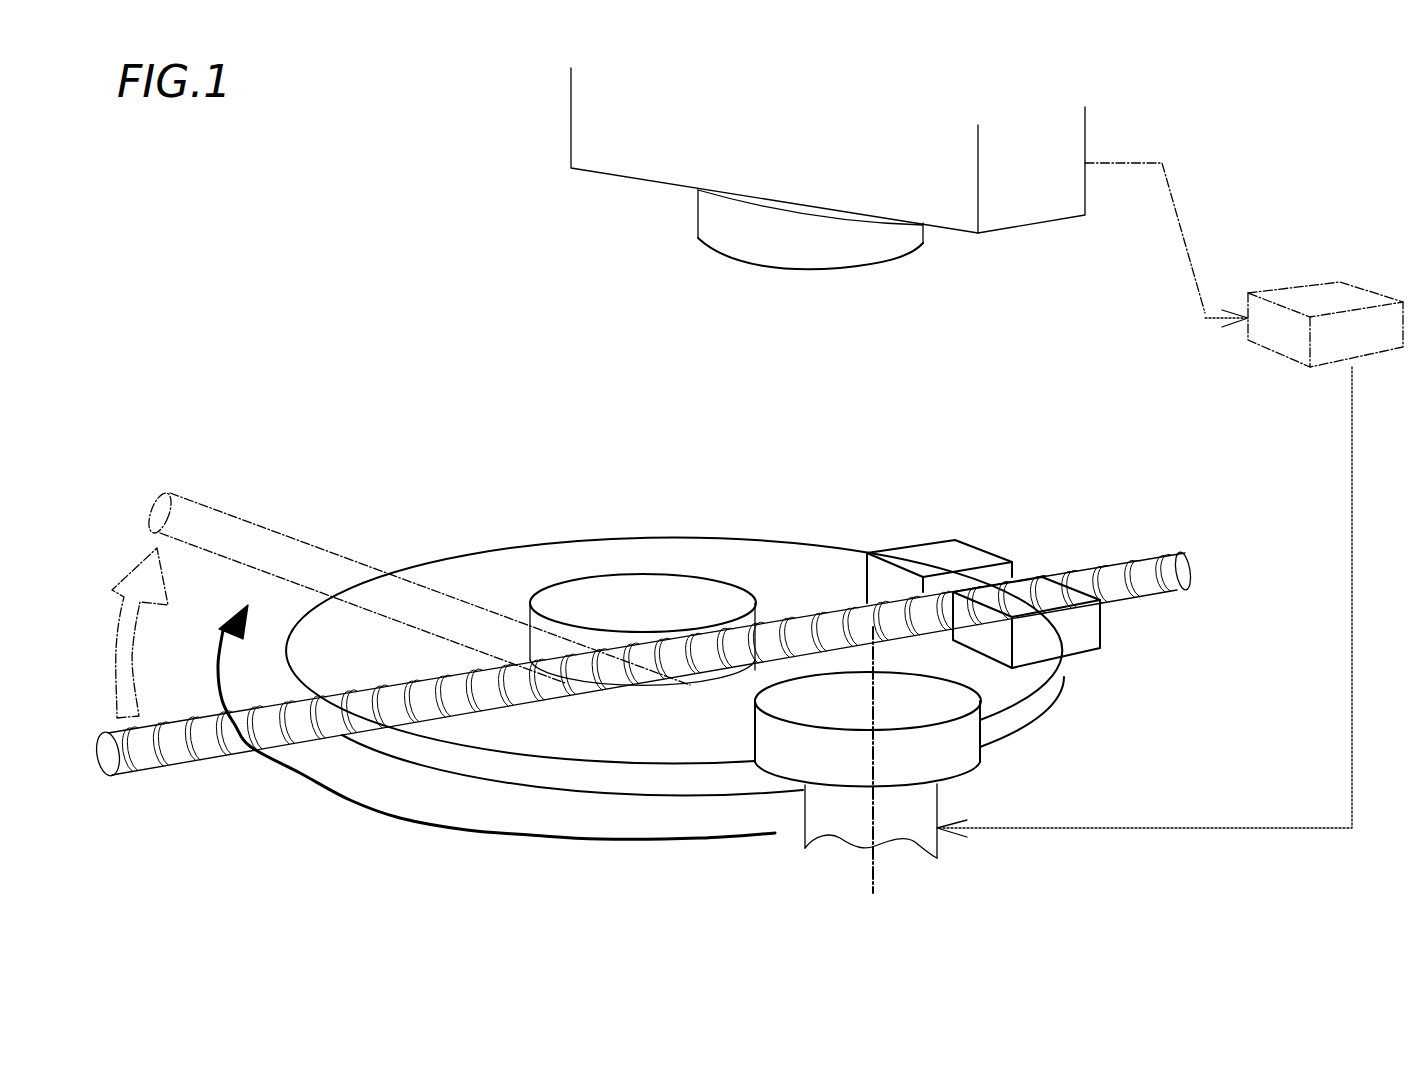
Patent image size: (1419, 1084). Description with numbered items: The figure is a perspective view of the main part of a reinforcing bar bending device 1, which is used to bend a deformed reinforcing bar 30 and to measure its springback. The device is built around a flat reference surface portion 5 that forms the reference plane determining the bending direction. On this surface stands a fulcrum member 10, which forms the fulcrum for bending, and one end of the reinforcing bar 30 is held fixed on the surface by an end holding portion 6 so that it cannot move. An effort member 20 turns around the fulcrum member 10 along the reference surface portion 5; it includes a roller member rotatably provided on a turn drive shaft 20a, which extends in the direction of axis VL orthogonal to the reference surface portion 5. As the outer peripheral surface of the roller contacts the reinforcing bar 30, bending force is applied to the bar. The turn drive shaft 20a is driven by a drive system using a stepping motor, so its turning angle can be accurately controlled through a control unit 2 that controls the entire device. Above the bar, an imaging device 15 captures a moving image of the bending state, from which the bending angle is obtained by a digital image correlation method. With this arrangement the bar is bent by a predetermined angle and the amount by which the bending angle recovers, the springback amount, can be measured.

The reinforcing bar bending device 1 is at (397, 120).
The control unit 2 is at (1297, 345).
The reference surface portion 5 is at (798, 562).
The end holding portion 6 is at (1032, 600).
The fulcrum member 10 is at (653, 607).
The imaging device 15 is at (842, 228).
The effort member 20 is at (748, 736).
The turn drive shaft 20a is at (860, 813).
The reinforcing bar 30 is at (213, 743).
The axis VL is at (877, 738).